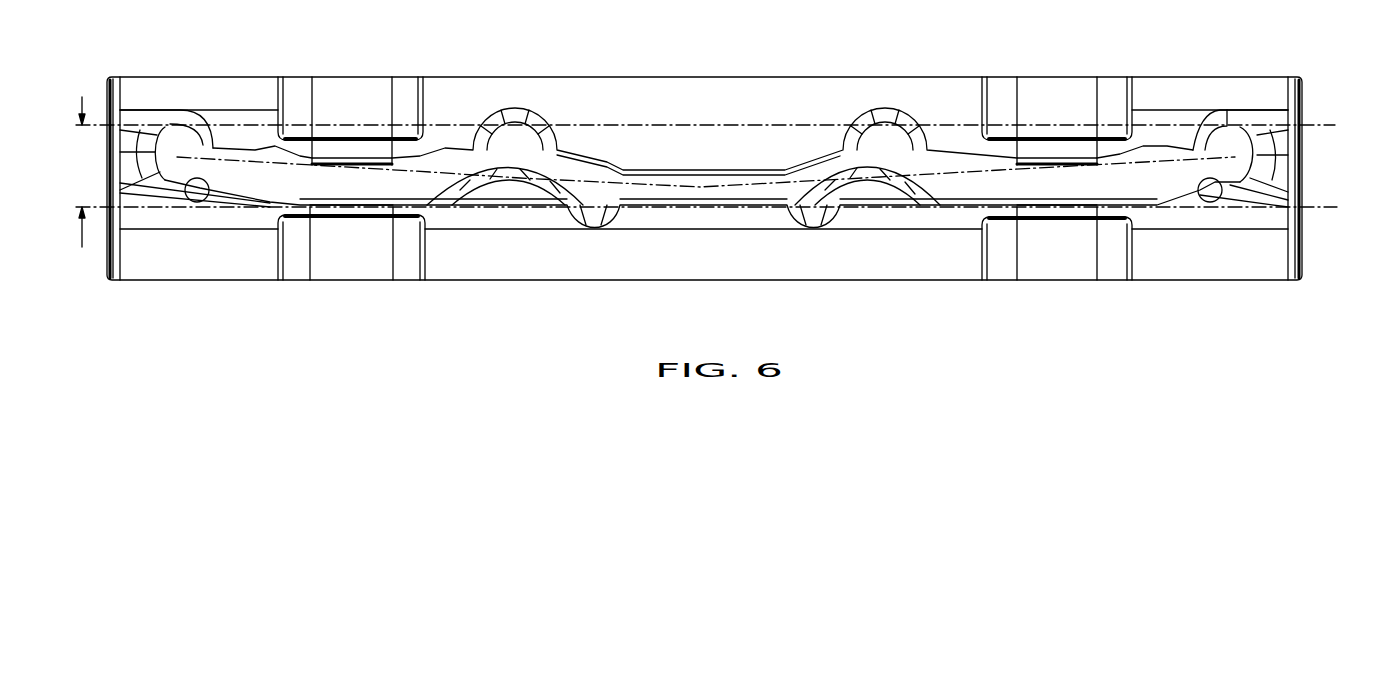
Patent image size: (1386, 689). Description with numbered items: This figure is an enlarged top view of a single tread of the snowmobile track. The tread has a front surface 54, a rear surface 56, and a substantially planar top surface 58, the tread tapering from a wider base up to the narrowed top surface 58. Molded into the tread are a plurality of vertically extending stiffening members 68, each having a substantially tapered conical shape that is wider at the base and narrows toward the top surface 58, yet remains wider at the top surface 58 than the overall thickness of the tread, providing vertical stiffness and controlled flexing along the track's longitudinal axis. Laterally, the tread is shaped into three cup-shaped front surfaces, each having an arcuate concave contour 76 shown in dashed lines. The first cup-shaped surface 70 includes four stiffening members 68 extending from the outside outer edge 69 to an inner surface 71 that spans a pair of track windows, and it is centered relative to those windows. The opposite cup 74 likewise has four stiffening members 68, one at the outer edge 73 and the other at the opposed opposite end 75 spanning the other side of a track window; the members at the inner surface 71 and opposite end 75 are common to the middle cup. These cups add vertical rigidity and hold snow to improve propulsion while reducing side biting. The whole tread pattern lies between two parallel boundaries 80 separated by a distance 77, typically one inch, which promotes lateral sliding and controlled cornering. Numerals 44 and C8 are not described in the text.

The shock absorbing element 44 is at (1328, 221).
The front surface 54 is at (762, 163).
The rear surface 56 is at (697, 203).
The top surface 58 is at (657, 178).
The stiffening member 68 is at (436, 207).
The outer edge 69 is at (105, 82).
The first cup-shaped surface 70 is at (355, 163).
The inner surface 71 is at (517, 137).
The outer edge 73 is at (1306, 80).
The cup-shaped surface 74 is at (1092, 163).
The opposite end 75 is at (897, 133).
The arcuate concave contour 76 is at (238, 158).
The distance 77 is at (82, 172).
The parallel boundaries 80 is at (1315, 120).
The pocket center axis C8 is at (1037, 177).